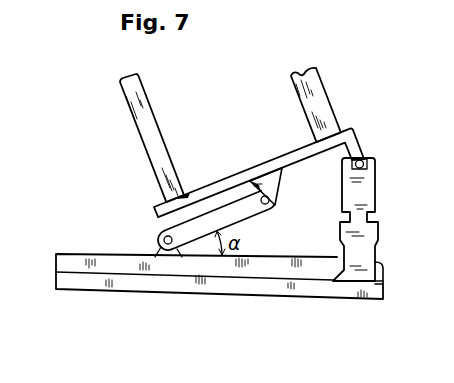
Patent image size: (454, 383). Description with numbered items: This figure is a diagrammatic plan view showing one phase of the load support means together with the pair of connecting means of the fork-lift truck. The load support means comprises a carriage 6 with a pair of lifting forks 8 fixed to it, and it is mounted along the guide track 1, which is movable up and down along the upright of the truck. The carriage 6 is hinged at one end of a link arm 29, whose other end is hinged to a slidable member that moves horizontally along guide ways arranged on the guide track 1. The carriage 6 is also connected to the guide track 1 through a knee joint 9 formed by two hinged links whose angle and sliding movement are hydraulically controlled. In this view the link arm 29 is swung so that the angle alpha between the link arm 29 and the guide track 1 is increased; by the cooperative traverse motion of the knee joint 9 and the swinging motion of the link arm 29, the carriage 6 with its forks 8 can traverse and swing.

The guide track 1 is at (330, 291).
The carriage 6 is at (223, 180).
The lifting forks 8 is at (155, 141).
The knee joint 9 is at (373, 190).
The link arm 29 is at (232, 217).